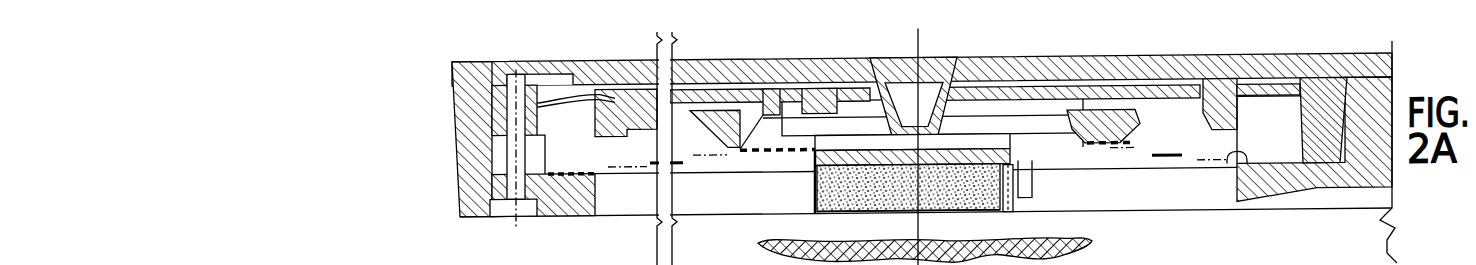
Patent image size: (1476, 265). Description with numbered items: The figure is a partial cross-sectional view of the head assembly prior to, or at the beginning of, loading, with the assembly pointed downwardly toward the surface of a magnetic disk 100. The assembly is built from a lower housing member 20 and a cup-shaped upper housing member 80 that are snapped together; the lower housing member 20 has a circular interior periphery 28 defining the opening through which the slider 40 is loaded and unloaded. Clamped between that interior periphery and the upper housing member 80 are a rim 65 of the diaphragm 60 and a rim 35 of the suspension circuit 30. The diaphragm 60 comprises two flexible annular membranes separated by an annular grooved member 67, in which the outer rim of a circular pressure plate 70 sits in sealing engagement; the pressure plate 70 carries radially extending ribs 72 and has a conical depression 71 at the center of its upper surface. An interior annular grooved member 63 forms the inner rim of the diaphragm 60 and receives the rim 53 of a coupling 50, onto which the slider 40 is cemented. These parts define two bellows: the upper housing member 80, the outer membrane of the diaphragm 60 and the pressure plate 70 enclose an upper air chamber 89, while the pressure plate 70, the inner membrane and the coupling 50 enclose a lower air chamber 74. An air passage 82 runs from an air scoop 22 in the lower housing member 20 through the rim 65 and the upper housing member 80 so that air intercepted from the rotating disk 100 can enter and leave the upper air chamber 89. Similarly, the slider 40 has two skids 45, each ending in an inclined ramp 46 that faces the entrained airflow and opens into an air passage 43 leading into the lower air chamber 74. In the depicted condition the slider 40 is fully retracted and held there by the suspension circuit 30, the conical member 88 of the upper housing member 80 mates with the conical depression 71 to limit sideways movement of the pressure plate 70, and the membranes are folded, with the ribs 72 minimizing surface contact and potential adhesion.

The lower housing member 20 is at (458, 180).
The air scoop 22 is at (516, 223).
The circular interior periphery 28 is at (600, 192).
The suspension circuit 30 is at (742, 156).
The rim of suspension circuit 35 is at (1227, 171).
The slider 40 is at (815, 190).
The air passages 43 is at (1012, 214).
The skids 45 is at (853, 223).
The inclined ramp 46 is at (965, 223).
The coupling 50 is at (785, 160).
The rim of coupling 53 is at (1072, 153).
The diaphragm 60 is at (1137, 144).
The interior annular grooved member 63 is at (1110, 153).
The rim of diaphragm 65 is at (1297, 88).
The annular grooved member 67 is at (1222, 104).
The pressure plate 70 is at (1010, 96).
The conical depression 71 is at (960, 92).
The ribs 72 is at (1133, 87).
The lower air chamber 74 is at (677, 122).
The upper housing member 80 is at (456, 128).
The air passage 82 is at (513, 97).
The conical member 88 is at (922, 98).
The upper air chamber 89 is at (572, 93).
The disk 100 is at (1088, 246).